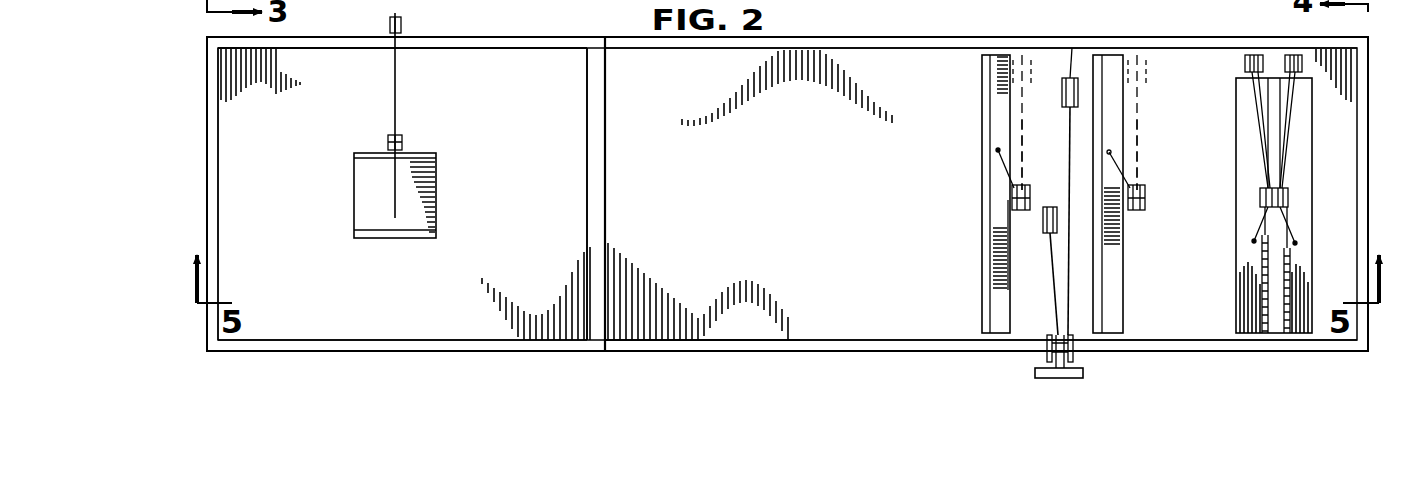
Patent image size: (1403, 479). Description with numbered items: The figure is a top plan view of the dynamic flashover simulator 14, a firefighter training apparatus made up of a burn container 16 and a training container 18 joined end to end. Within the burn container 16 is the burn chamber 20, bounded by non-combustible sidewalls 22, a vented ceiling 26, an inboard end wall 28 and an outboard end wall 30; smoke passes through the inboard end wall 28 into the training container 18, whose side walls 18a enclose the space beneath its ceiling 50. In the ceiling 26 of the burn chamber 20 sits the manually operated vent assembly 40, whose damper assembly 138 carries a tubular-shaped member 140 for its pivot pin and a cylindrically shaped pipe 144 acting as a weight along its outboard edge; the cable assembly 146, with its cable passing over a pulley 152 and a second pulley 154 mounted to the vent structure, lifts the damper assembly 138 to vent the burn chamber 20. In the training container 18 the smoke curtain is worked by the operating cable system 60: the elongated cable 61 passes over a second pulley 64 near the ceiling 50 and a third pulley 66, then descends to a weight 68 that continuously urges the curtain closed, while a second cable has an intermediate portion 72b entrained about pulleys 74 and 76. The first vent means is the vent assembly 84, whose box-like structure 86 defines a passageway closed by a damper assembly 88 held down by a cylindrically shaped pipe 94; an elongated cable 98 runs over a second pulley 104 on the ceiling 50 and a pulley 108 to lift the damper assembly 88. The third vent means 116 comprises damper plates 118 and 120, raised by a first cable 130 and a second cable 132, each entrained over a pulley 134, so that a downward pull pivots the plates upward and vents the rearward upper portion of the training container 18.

The dynamic flashover simulator 14 is at (440, 356).
The burn container 16 is at (337, 352).
The training container 18 is at (865, 343).
The side walls 18a is at (936, 37).
The burn chamber 20 is at (558, 216).
The non-combustible sidewalls 22 is at (538, 35).
The vented ceiling 26 is at (486, 78).
The inboard end wall 28 is at (606, 140).
The outboard end wall 30 is at (201, 126).
The vent assembly 40 is at (356, 180).
The ceiling 50 is at (790, 190).
The operating cable system 60 is at (1076, 254).
The elongated cable 61 is at (1051, 267).
The second pulley 64 is at (1072, 76).
The third pulley 66 is at (1048, 344).
The weight 68 is at (1038, 372).
The intermediate portion 72b is at (1060, 290).
The pulley 74 is at (1073, 351).
The pulley 76 is at (1044, 224).
The vent assembly 84 is at (977, 134).
The box-like structure 86 is at (979, 252).
The damper assembly 88 is at (998, 101).
The cylindrically shaped pipe 94 is at (985, 75).
The elongated cable 98 is at (1022, 116).
The second pulley 104 is at (1022, 60).
The pulley 108 is at (1012, 199).
The third vent means 116 is at (1307, 195).
The damper plate 118 is at (1252, 288).
The damper plate 120 is at (1300, 286).
The first cable 130 is at (1290, 92).
The second cable 132 is at (1258, 108).
The pulley 134 is at (1292, 58).
The damper assembly 138 is at (425, 190).
The tubular-shaped member 140 is at (372, 153).
The cylindrically shaped pipe 144 is at (409, 240).
The cable assembly 146 is at (392, 80).
The pulley 152 is at (389, 24).
The second pulley 154 is at (403, 143).